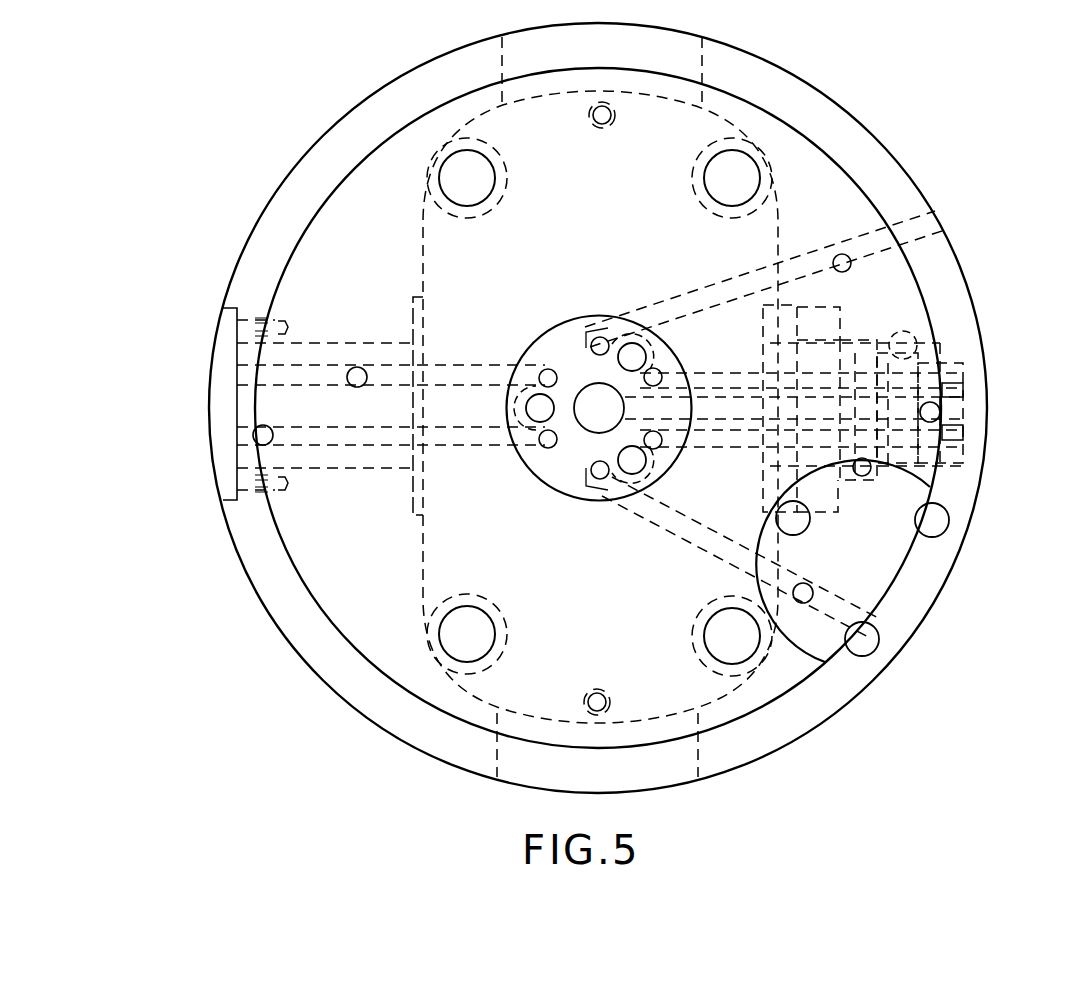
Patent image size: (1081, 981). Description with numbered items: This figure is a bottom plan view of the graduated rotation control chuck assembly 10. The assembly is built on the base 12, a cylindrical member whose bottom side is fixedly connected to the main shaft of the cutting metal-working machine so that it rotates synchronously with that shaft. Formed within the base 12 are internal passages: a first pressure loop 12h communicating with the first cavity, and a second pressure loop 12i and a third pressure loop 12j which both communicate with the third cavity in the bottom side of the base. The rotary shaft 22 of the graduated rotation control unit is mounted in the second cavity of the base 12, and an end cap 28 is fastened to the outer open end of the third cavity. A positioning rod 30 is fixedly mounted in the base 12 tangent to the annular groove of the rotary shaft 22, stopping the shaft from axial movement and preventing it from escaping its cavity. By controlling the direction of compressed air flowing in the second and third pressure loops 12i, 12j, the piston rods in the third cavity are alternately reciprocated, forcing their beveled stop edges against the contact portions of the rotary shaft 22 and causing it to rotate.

The graduated rotation control chuck assembly 10 is at (269, 128).
The base 12 is at (261, 212).
The first pressure loop 12h is at (391, 368).
The second pressure loop 12i is at (722, 375).
The third pressure loop 12j is at (720, 455).
The rotary shaft 22 is at (862, 355).
The end cap 28 is at (930, 587).
The positioning rod 30 is at (900, 330).